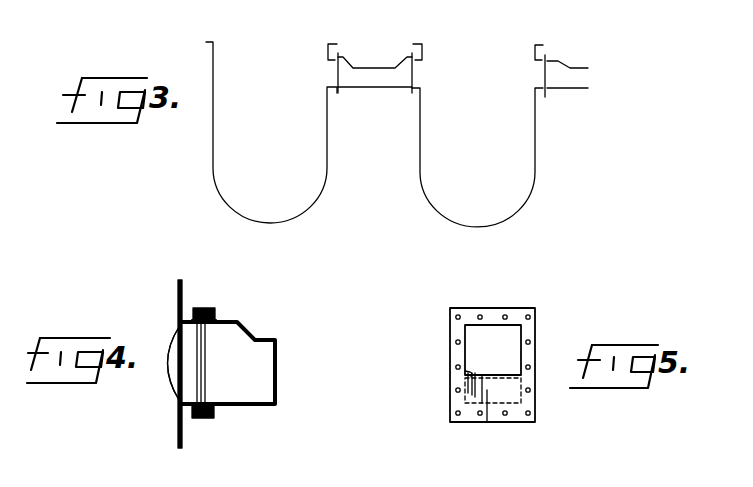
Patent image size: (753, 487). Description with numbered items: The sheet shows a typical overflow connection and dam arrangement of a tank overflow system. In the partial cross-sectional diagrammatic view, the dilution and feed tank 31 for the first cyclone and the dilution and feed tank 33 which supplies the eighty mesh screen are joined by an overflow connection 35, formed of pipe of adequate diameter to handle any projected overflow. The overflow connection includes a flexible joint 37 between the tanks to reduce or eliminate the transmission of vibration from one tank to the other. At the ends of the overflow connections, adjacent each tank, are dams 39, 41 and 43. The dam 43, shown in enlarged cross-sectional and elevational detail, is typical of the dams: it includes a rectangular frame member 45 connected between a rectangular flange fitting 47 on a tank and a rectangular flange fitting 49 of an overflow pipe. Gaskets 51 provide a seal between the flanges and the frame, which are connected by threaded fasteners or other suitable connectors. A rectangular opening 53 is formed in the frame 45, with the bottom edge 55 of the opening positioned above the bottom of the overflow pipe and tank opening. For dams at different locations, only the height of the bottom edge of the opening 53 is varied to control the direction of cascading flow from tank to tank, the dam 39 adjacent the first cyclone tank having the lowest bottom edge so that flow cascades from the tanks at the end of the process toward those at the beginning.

In FIG. 3, the dilution and feed tank 31 is at (327, 155).
In FIG. 3, the dilution and feed tank 33 is at (537, 143).
In FIG. 3, the overflow connection 35 is at (356, 64).
In FIG. 3, the flexible joint 37 is at (374, 89).
In FIG. 3, the dam 39 is at (337, 72).
In FIG. 3, the dam 41 is at (413, 73).
In FIG. 3, the dam 43 is at (543, 73).
In FIG. 4, the dam 43 is at (214, 423).
In FIG. 4, the rectangular frame member 45 is at (207, 388).
In FIG. 5, the rectangular frame member 45 is at (536, 323).
In FIG. 4, the rectangular flange fitting 47 is at (197, 309).
In FIG. 4, the rectangular flange fitting 49 is at (216, 306).
In FIG. 4, the gaskets 51 is at (203, 309).
In FIG. 5, the rectangular opening 53 is at (493, 350).
In FIG. 4, the bottom edge 55 is at (196, 372).
In FIG. 5, the bottom edge 55 is at (465, 371).